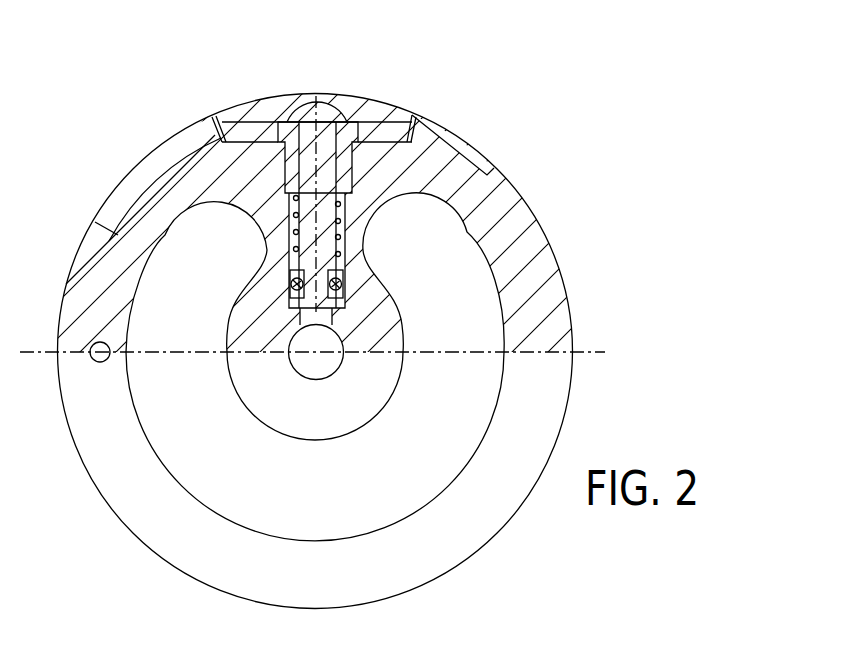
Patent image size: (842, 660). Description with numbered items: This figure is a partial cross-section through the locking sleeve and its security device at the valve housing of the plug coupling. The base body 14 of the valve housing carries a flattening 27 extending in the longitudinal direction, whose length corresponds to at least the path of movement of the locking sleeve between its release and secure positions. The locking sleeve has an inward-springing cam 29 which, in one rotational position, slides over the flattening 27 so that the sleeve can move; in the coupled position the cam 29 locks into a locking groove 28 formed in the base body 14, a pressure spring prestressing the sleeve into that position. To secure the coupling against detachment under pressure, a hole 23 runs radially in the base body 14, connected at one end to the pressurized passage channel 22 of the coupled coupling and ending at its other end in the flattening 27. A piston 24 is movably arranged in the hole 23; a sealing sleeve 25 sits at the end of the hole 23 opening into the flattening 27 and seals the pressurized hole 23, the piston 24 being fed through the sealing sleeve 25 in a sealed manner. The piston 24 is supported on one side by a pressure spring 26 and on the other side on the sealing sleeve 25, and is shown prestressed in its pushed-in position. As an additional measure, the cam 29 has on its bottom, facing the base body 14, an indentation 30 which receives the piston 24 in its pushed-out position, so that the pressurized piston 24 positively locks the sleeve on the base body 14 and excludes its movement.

The base body 14 is at (522, 220).
The passage channel 22 is at (307, 368).
The hole 23 is at (343, 216).
The piston 24 is at (340, 264).
The sealing sleeve 25 is at (355, 172).
The pressure spring 26 is at (289, 228).
The flattening 27 is at (207, 180).
The locking groove 28 is at (168, 150).
The cam 29 is at (372, 100).
The indentation 30 is at (307, 95).